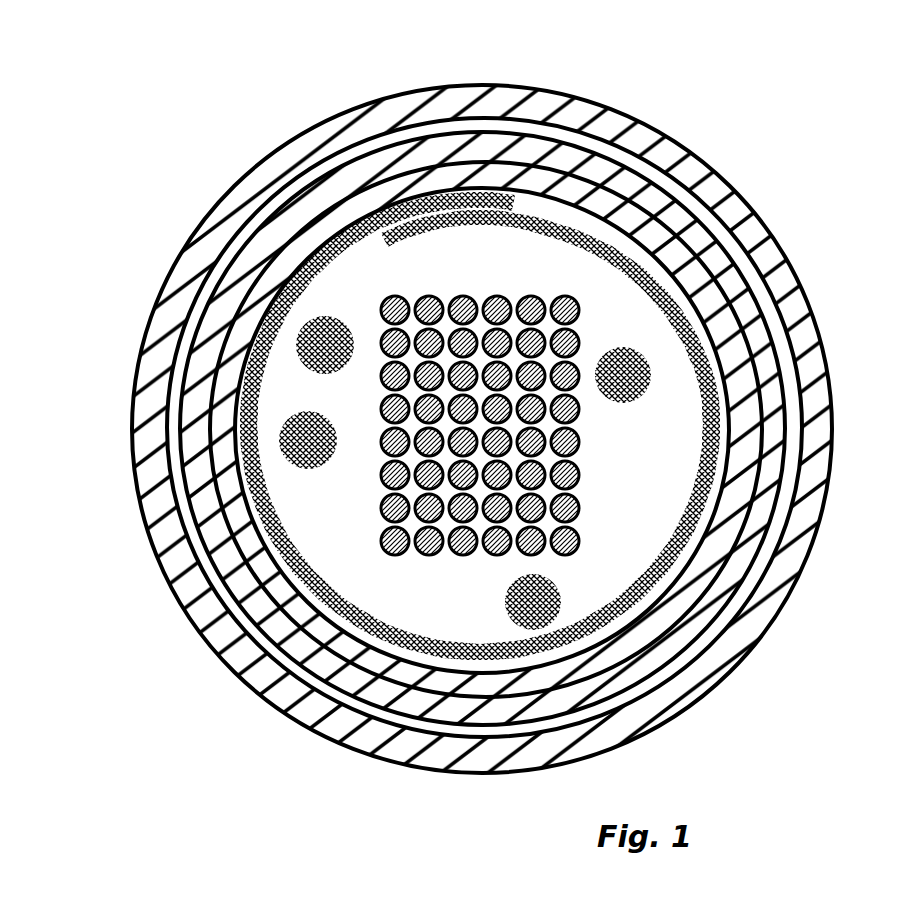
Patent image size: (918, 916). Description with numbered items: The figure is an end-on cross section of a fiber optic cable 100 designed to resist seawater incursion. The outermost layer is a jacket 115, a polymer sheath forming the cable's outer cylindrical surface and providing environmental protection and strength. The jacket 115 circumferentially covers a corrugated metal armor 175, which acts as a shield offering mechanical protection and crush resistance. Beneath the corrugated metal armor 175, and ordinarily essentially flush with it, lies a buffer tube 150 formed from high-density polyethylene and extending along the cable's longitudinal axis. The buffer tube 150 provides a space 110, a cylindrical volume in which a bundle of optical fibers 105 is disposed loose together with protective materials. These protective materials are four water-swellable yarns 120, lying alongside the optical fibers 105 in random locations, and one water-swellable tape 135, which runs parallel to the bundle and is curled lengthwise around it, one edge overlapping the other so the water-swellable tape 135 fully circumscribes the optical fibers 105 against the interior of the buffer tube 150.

The fiber optic cable 100 is at (116, 180).
The optical fibers 105 is at (556, 279).
The space 110 is at (662, 470).
The jacket 115 is at (600, 752).
The water-swellable yarns 120 is at (325, 330).
The water-swellable tape 135 is at (600, 620).
The buffer tube 150 is at (458, 173).
The corrugated metal armor 175 is at (460, 148).